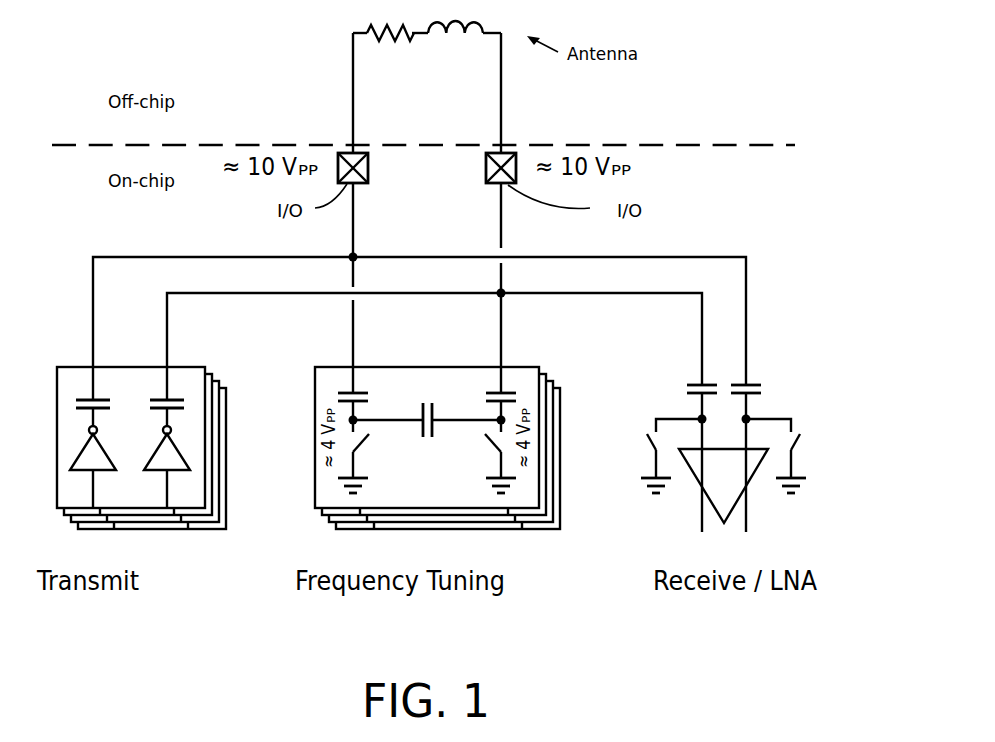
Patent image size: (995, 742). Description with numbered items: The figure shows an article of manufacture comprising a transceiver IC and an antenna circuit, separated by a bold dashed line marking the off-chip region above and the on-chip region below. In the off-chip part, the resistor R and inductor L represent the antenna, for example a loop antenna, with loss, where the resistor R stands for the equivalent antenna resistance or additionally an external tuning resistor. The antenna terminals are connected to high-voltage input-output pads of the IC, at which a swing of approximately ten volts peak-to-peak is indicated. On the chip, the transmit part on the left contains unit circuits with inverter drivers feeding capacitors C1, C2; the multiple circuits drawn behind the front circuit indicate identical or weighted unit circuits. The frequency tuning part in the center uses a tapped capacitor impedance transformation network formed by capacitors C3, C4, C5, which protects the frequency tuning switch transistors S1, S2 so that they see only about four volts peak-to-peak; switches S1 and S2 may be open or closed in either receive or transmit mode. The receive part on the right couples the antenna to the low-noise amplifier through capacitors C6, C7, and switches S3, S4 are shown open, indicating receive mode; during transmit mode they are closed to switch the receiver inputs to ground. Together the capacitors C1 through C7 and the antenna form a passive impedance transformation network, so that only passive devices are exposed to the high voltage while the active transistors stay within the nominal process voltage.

The resistor R is at (390, 54).
The inductor L is at (455, 52).
The on-chip capacitor C1 is at (89, 441).
The on-chip capacitor C2 is at (170, 441).
The on-chip capacitor C3 is at (370, 402).
The on-chip capacitor C4 is at (427, 407).
The on-chip capacitor C5 is at (484, 402).
The on-chip capacitor C6 is at (685, 413).
The on-chip capacitor C7 is at (762, 413).
The frequency tuning switch transistor S1 is at (370, 456).
The frequency tuning switch transistor S2 is at (487, 456).
The switch S3 is at (659, 456).
The switch S4 is at (790, 456).